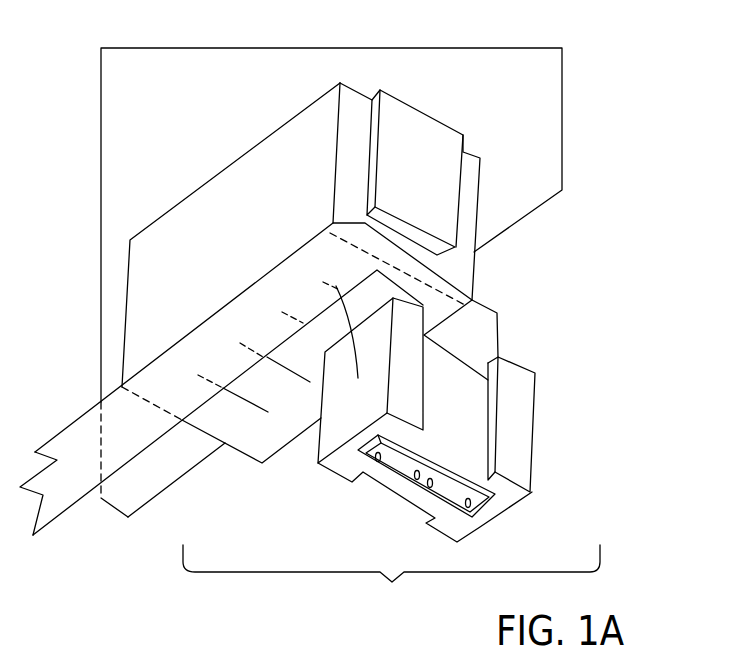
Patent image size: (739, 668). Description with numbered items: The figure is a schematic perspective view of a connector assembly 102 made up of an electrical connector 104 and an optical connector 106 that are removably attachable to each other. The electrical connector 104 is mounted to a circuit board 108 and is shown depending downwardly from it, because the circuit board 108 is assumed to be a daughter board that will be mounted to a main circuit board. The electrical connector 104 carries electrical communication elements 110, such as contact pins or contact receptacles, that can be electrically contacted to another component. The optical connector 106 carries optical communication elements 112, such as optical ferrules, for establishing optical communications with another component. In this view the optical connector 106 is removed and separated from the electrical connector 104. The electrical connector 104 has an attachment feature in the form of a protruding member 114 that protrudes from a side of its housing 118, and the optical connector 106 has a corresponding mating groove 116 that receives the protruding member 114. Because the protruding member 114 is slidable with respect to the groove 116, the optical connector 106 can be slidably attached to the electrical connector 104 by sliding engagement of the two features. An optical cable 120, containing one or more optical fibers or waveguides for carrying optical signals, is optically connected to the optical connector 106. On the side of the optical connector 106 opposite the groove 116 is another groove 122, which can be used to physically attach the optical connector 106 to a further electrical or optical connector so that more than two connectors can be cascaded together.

The connector assembly 102 is at (391, 582).
The electrical connector 104 is at (240, 449).
The optical connector 106 is at (503, 523).
The circuit board 108 is at (225, 58).
The electrical communication elements 110 is at (223, 388).
The optical communication elements 112 is at (410, 458).
The protruding member 114 is at (436, 133).
The groove 116 is at (433, 521).
The housing 118 is at (152, 297).
The optical cable 120 is at (62, 505).
The groove 122 is at (493, 383).